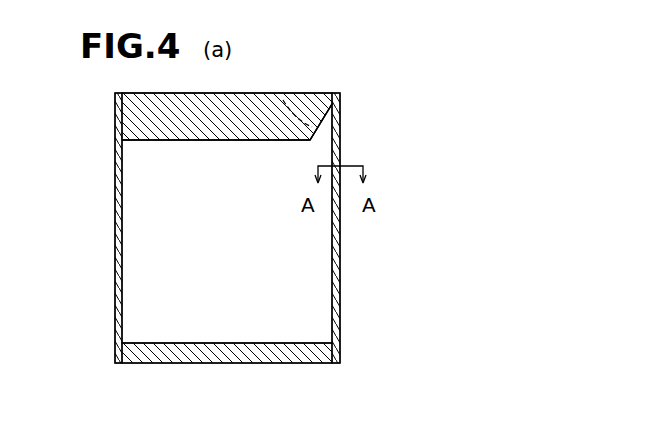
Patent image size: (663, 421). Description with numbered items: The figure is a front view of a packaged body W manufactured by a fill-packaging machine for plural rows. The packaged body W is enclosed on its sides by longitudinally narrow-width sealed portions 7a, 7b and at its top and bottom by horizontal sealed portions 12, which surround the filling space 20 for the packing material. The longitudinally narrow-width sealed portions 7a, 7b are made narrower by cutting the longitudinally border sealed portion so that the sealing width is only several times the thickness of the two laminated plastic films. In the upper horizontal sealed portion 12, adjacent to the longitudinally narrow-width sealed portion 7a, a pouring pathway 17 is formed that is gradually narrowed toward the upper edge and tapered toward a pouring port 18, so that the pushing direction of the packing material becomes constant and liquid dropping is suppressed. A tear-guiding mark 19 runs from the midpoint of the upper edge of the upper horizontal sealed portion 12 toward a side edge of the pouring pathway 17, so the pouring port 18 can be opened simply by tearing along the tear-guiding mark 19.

The packaged body W is at (367, 77).
The longitudinally narrow-width sealed portion 7a is at (340, 278).
The longitudinally narrow-width sealed portion 7b is at (115, 270).
The horizontal sealed portion 12 is at (160, 118).
The pouring pathway 17 is at (332, 112).
The pouring port 18 is at (332, 130).
The tear-guiding mark 19 is at (296, 117).
The filling space 20 is at (163, 223).